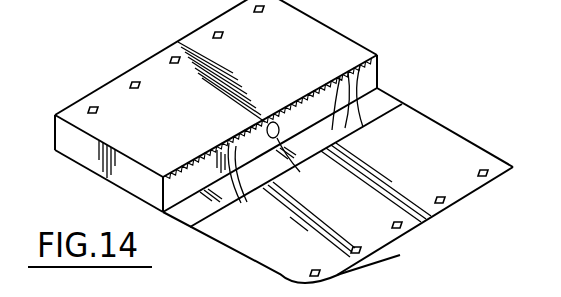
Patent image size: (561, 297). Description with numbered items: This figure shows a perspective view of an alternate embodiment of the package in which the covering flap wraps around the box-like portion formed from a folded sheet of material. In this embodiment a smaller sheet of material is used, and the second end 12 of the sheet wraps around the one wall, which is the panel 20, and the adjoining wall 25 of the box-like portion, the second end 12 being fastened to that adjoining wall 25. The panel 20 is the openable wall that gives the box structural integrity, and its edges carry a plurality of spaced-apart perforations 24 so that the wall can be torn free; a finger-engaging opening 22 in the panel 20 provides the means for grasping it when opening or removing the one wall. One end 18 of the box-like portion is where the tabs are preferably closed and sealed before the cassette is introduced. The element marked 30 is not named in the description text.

The second end 12 is at (468, 196).
The one end 18 is at (78, 147).
The panel 20 is at (162, 202).
The opening 22 is at (283, 150).
The perforations 24 is at (243, 192).
The adjoining wall 25 is at (147, 61).
The perforated edge strip 30 is at (250, 0).